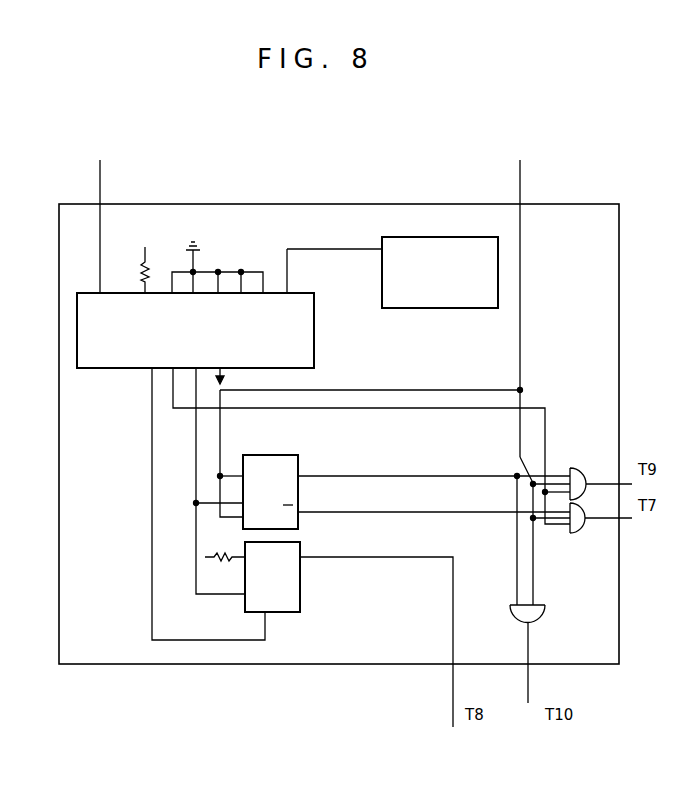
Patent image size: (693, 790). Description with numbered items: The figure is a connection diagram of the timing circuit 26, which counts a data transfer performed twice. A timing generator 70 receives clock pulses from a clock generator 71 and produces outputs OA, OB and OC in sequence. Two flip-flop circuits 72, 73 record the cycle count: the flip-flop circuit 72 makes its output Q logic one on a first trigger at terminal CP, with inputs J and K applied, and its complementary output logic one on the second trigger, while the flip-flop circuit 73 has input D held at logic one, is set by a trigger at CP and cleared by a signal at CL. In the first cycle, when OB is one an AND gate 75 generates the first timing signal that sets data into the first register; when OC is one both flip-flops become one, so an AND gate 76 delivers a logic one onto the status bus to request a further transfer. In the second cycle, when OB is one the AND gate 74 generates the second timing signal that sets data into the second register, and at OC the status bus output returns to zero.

The timing circuit 26 is at (341, 204).
The timing generator 70 is at (314, 331).
The clock generator 71 is at (441, 237).
The flip-flop circuit 72 is at (299, 464).
The flip-flop circuit 73 is at (300, 596).
The AND gate 74 is at (575, 468).
The AND gate 75 is at (578, 533).
The AND gate 76 is at (545, 613).